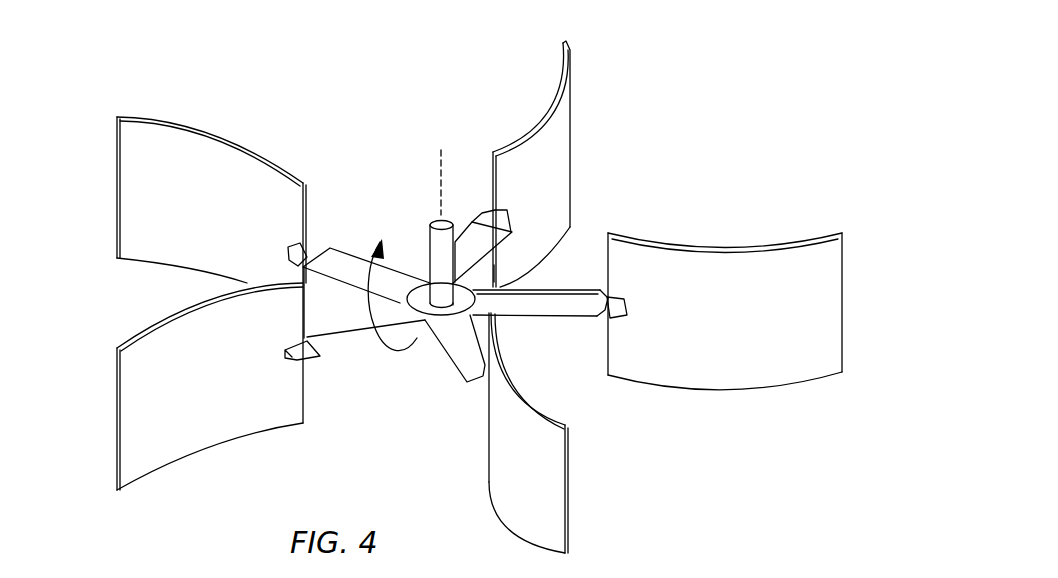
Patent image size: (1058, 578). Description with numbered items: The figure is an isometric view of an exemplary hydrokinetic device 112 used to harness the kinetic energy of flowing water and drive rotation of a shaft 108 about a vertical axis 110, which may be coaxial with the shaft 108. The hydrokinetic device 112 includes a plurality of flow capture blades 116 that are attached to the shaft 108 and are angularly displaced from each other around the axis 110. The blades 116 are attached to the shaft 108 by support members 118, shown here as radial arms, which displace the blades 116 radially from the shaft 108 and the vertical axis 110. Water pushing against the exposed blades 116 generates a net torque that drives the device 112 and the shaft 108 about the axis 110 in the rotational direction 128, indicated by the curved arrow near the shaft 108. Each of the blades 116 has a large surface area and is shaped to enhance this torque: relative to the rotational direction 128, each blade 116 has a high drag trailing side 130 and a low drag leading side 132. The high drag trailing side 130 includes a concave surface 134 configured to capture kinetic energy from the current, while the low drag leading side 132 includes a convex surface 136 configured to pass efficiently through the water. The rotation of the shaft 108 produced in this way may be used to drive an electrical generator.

The shaft 108 is at (432, 243).
The vertical axis 110 is at (437, 180).
The hydrokinetic device 112 is at (708, 93).
The flow capture blade 116 is at (572, 44).
The support member 118 is at (477, 235).
The rotational direction 128 is at (368, 305).
The high drag trailing side 130 is at (562, 73).
The low drag leading side 132 is at (268, 150).
The concave surface 134 is at (552, 108).
The convex surface 136 is at (233, 135).